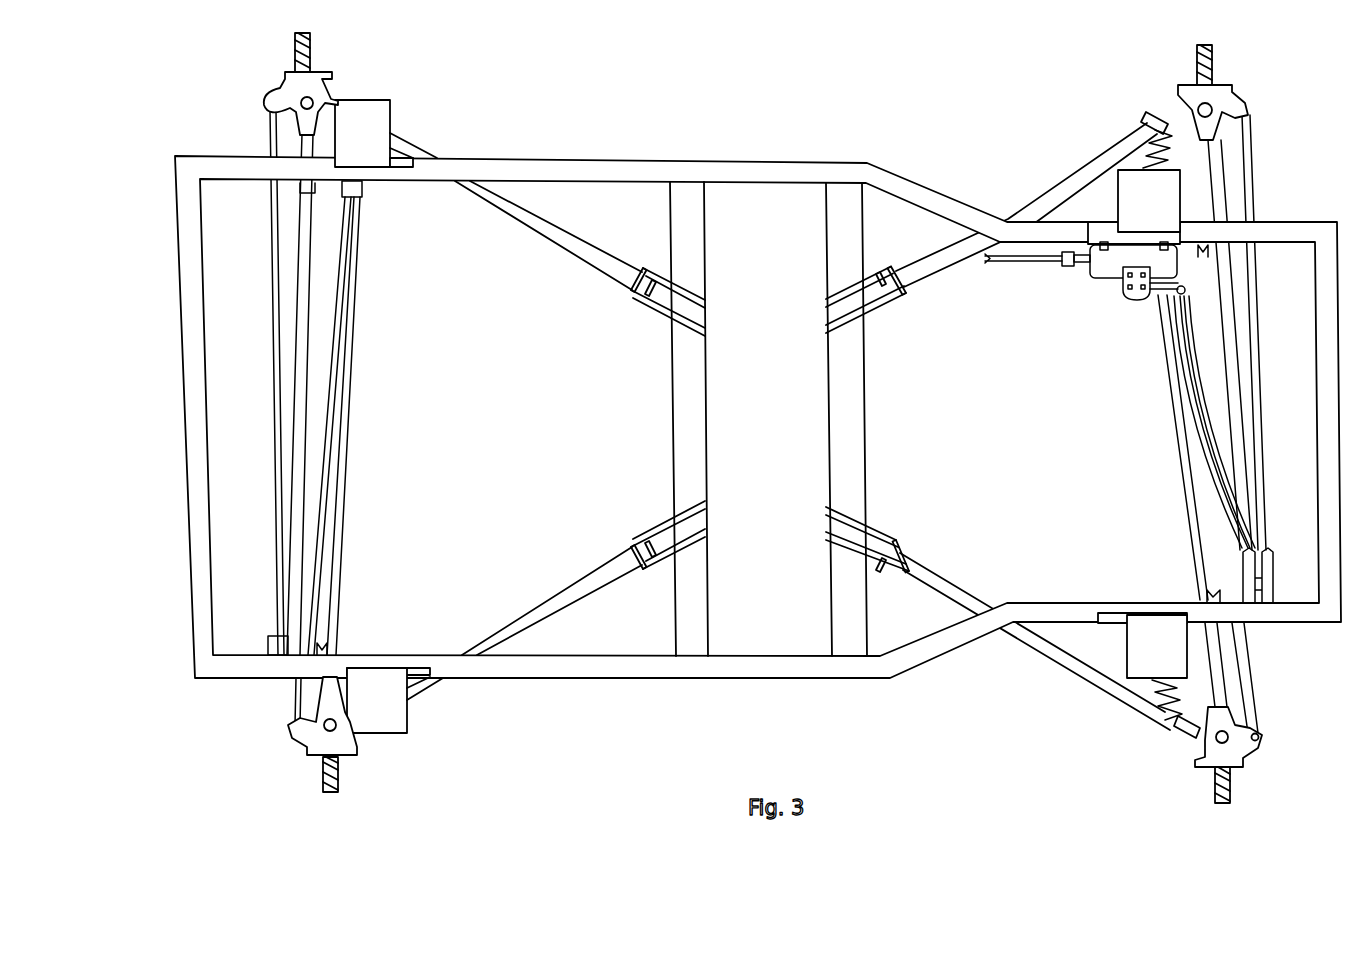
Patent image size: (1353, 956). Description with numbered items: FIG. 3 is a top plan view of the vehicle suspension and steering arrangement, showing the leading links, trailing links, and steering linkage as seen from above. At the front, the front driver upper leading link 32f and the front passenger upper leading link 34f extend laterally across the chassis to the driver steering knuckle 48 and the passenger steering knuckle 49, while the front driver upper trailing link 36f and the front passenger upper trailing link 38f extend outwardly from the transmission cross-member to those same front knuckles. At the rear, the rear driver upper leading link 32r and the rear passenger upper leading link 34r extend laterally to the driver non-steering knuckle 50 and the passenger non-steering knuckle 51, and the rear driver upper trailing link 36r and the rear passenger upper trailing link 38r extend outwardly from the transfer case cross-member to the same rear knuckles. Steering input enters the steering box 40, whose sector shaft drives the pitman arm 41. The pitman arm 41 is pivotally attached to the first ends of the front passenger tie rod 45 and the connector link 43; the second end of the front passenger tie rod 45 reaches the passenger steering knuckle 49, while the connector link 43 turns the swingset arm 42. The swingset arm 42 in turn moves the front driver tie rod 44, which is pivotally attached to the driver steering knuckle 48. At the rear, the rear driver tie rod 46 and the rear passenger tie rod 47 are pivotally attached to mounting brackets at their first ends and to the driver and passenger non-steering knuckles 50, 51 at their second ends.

The rear driver upper leading link 32r is at (292, 410).
The rear passenger upper leading link 34r is at (342, 407).
The rear driver upper trailing link 36r is at (513, 210).
The rear passenger upper trailing link 38r is at (545, 610).
The front driver upper leading link 32f is at (1240, 392).
The front passenger upper leading link 34f is at (1180, 408).
The front driver upper trailing link 36f is at (1048, 190).
The front passenger upper trailing link 38f is at (1070, 660).
The steering box 40 is at (1103, 263).
The pitman arm 41 is at (1153, 300).
The swingset arm 42 is at (1253, 543).
The connector link 43 is at (1230, 480).
The front driver tie rod 44 is at (1263, 343).
The front passenger tie rod 45 is at (1205, 445).
The rear driver tie rod 46 is at (275, 308).
The rear passenger tie rod 47 is at (323, 483).
The driver steering knuckle 48 is at (1222, 88).
The passenger steering knuckle 49 is at (1233, 752).
The driver non-steering knuckle 50 is at (287, 82).
The passenger non-steering knuckle 51 is at (316, 745).